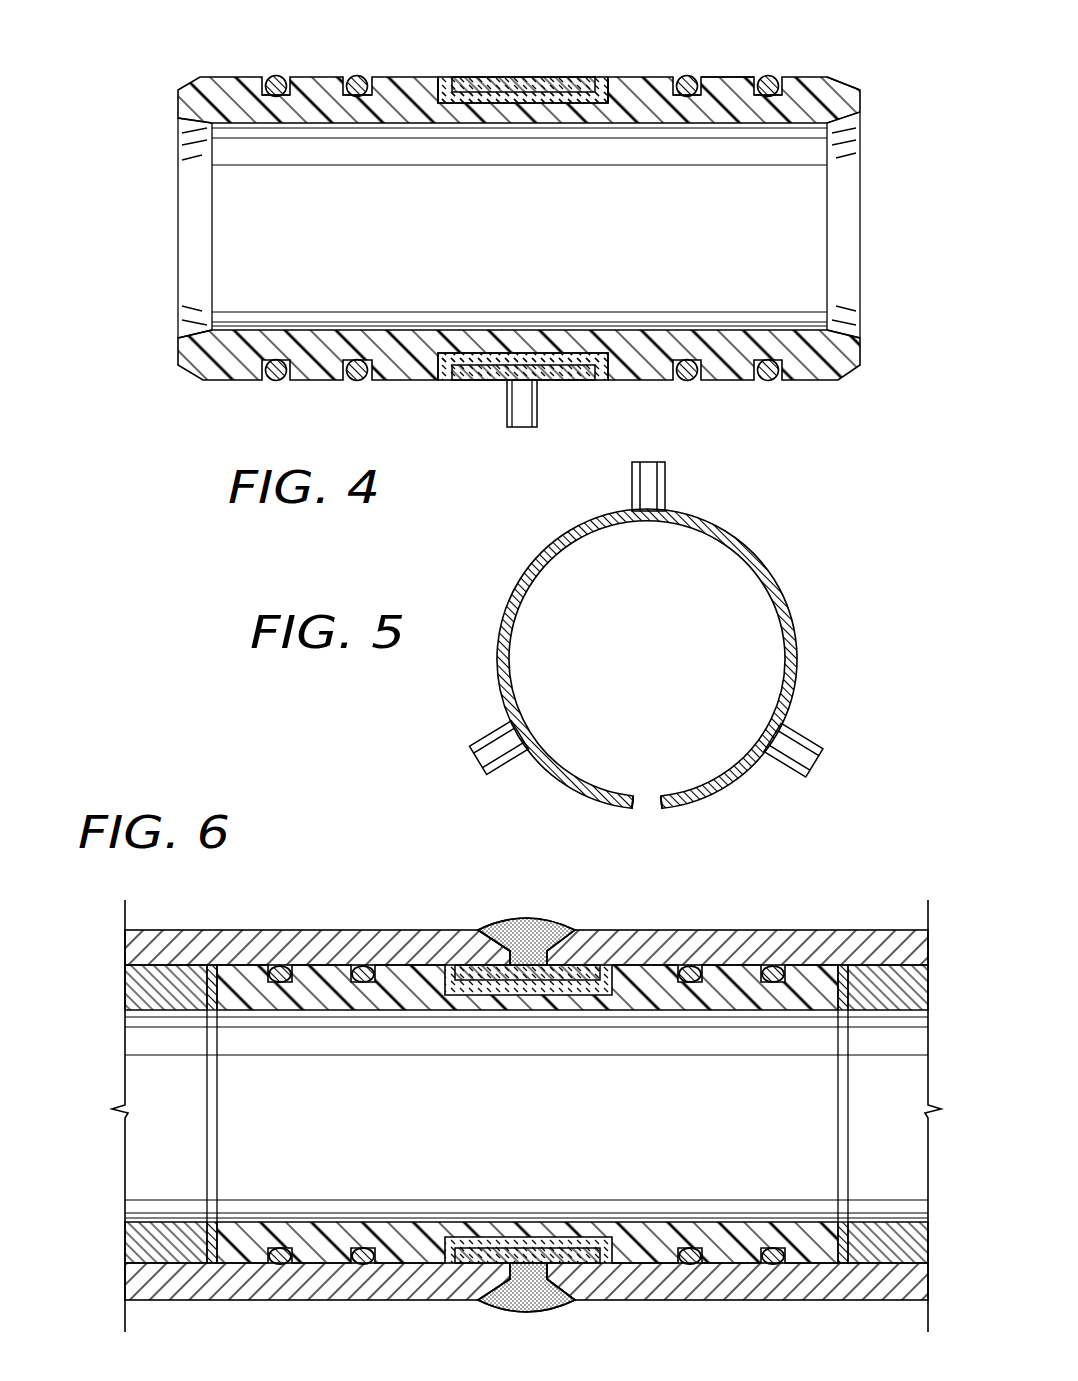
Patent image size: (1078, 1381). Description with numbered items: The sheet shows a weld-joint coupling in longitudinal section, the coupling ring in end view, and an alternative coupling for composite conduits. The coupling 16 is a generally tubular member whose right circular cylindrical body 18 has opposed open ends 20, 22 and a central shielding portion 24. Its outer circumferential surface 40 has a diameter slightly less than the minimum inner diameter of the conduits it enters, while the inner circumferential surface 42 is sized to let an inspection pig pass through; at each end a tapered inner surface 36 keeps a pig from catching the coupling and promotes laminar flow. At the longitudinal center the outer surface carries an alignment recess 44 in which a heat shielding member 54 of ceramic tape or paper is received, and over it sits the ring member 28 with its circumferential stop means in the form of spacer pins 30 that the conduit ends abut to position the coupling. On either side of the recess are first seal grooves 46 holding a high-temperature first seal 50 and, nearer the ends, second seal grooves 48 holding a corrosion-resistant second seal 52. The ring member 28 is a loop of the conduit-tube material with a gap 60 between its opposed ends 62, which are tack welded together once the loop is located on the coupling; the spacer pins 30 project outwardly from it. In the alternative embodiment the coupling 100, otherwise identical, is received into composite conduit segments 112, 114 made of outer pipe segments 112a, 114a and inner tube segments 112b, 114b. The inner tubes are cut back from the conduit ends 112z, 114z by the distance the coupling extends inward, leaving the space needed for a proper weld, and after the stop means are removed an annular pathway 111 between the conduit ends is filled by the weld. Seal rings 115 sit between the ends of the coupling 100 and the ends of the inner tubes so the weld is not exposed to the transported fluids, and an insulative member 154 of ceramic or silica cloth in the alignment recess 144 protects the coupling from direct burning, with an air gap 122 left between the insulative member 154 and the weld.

In FIG. 4, the coupling 16 is at (298, 392).
In FIG. 4, the coupling body 18 is at (838, 98).
In FIG. 4, the first end of coupling body 20 is at (846, 148).
In FIG. 4, the second end of coupling body 22 is at (190, 175).
In FIG. 4, the central shielding portion 24 is at (592, 65).
In FIG. 4, the ring member 28 is at (484, 82).
In FIG. 5, the ring member 28 is at (782, 605).
In FIG. 4, the spacer pins 30 is at (540, 393).
In FIG. 5, the spacer pins 30 is at (662, 490).
In FIG. 4, the tapered inner surface 36 is at (210, 240).
In FIG. 4, the outer circumferential surface 40 is at (729, 79).
In FIG. 4, the inner circumferential surface 42 is at (712, 337).
In FIG. 4, the alignment recess 44 is at (443, 93).
In FIG. 4, the first seal grooves 46 is at (352, 96).
In FIG. 4, the second seal grooves 48 is at (270, 96).
In FIG. 4, the first seal 50 is at (350, 75).
In FIG. 6, the first seal 50 is at (694, 983).
In FIG. 4, the second seal 52 is at (270, 76).
In FIG. 6, the second seal 52 is at (775, 965).
In FIG. 4, the heat shielding member 54 is at (563, 104).
In FIG. 5, the gap 60 is at (647, 802).
In FIG. 5, the opposed ends of loop 62 is at (636, 812).
In FIG. 6, the coupling 100 is at (800, 1003).
In FIG. 6, the annular pathway 111 is at (602, 1302).
In FIG. 6, the composite conduit segment 112 is at (533, 1132).
In FIG. 6, the outer pipe segment 112a is at (679, 1290).
In FIG. 6, the inner tube segment 112b is at (897, 1257).
In FIG. 6, the conduit end 112z is at (551, 1276).
In FIG. 6, the composite conduit segment 114 is at (520, 1132).
In FIG. 6, the outer pipe segment 114a is at (403, 1288).
In FIG. 6, the inner tube segment 114b is at (155, 1257).
In FIG. 6, the conduit end 114z is at (508, 1308).
In FIG. 6, the seal rings 115 is at (212, 973).
In FIG. 6, the air gap 122 is at (558, 1257).
In FIG. 6, the alignment recess 144 is at (568, 990).
In FIG. 6, the insulative member 154 is at (502, 1240).